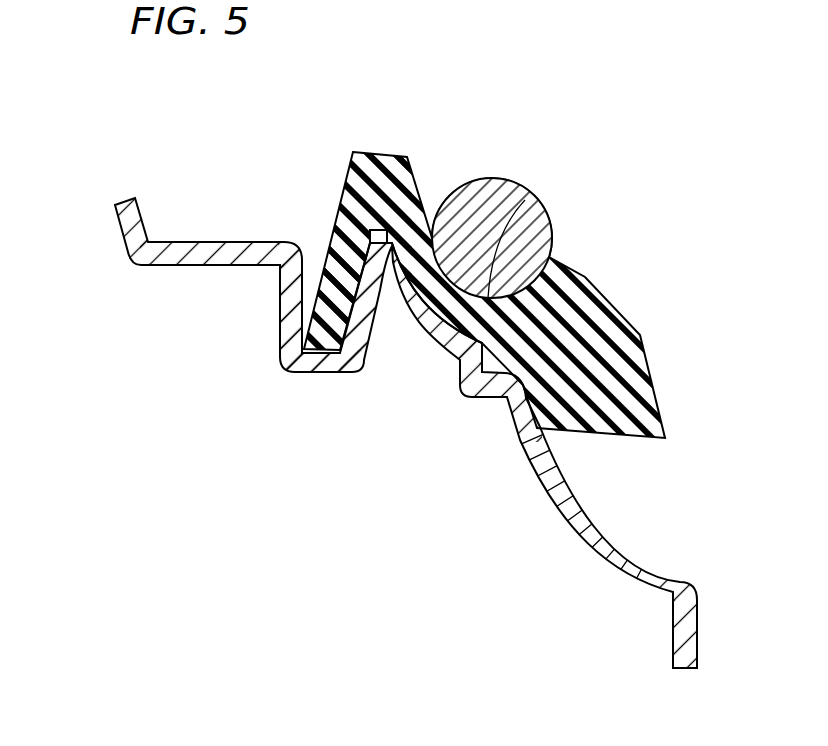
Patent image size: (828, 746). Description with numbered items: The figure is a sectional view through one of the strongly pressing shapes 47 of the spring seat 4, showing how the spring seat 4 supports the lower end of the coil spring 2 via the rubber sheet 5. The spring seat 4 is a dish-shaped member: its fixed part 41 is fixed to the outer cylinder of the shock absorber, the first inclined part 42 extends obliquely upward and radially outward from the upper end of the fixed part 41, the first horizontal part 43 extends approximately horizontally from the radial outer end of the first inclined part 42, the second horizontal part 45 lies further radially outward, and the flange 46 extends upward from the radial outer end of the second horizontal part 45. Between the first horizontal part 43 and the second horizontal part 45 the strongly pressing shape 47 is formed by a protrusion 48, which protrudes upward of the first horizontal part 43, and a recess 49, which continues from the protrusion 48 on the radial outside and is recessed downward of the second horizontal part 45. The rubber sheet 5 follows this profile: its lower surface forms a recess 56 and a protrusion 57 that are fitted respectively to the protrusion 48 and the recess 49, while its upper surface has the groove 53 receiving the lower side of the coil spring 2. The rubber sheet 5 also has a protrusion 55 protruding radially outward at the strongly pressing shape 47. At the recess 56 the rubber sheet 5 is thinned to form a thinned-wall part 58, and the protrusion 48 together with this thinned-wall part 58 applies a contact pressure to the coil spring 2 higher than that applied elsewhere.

The coil spring 2 is at (470, 202).
The spring seat 4 is at (276, 398).
The rubber sheet 5 is at (641, 250).
The fixed part 41 is at (673, 638).
The first inclined part 42 is at (600, 553).
The first horizontal part 43 is at (485, 390).
The second horizontal part 45 is at (187, 265).
The flange 46 is at (119, 222).
The strongly pressing shape 47 is at (312, 188).
The protrusion 48 is at (374, 238).
The recess 49 is at (313, 320).
The groove 53 is at (525, 200).
The protrusion 55 is at (357, 188).
The recess 56 is at (384, 268).
The protrusion 57 is at (322, 373).
The thinned-wall part 58 is at (446, 314).